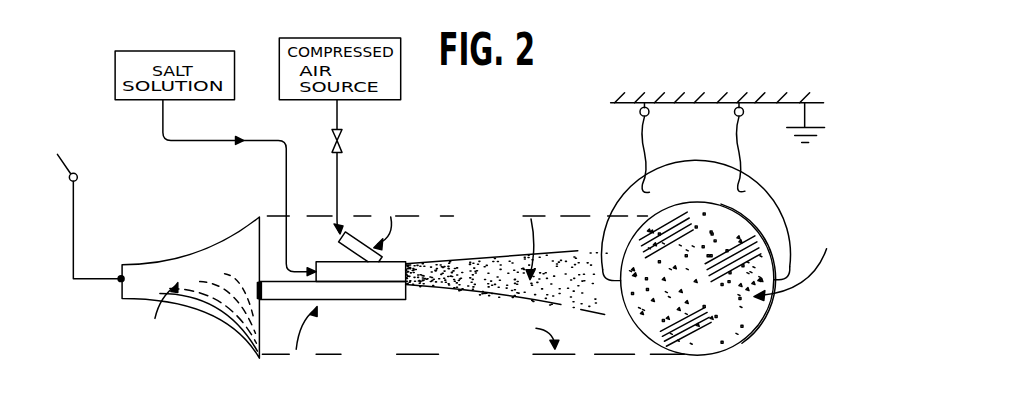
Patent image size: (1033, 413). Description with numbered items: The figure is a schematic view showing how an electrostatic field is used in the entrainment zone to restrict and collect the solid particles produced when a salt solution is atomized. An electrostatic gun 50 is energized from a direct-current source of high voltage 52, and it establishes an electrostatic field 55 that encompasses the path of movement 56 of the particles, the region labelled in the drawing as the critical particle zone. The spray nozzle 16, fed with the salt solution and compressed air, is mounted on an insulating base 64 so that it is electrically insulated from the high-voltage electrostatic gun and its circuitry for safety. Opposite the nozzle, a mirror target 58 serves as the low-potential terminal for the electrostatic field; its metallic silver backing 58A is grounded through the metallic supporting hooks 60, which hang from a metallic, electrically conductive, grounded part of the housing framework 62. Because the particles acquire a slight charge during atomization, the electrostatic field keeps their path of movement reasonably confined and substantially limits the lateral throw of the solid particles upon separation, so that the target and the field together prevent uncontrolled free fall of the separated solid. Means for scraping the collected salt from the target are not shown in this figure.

The spray nozzle 16 is at (381, 253).
The electrostatic gun 50 is at (217, 257).
The direct-current source of high voltage 52 is at (142, 208).
The electrostatic field 55 is at (587, 211).
The path of movement of the particles 56 is at (498, 268).
The mirror target 58 is at (742, 330).
The metallic silver backing 58A is at (778, 310).
The metallic supporting hooks 60 is at (742, 145).
The grounded part of the housing framework 62 is at (768, 100).
The insulating base 64 is at (373, 293).